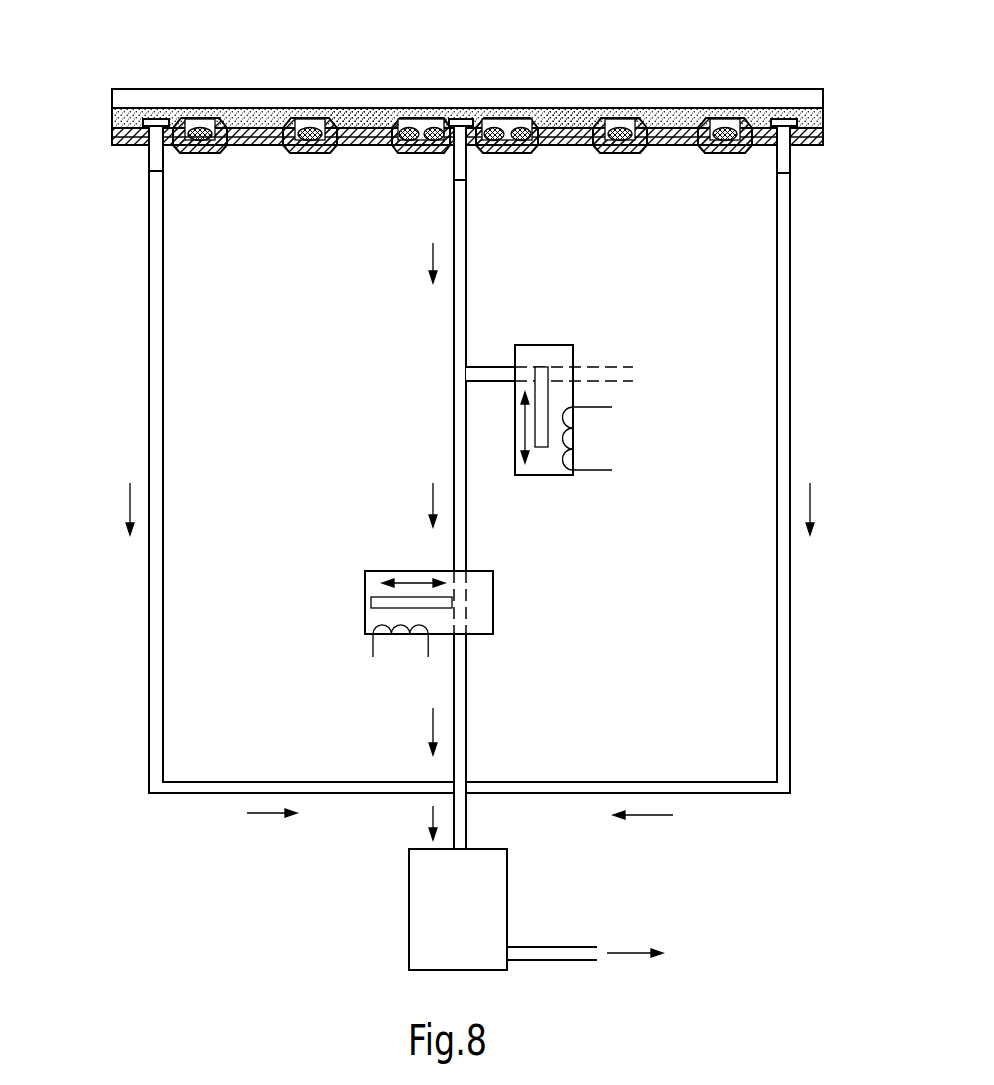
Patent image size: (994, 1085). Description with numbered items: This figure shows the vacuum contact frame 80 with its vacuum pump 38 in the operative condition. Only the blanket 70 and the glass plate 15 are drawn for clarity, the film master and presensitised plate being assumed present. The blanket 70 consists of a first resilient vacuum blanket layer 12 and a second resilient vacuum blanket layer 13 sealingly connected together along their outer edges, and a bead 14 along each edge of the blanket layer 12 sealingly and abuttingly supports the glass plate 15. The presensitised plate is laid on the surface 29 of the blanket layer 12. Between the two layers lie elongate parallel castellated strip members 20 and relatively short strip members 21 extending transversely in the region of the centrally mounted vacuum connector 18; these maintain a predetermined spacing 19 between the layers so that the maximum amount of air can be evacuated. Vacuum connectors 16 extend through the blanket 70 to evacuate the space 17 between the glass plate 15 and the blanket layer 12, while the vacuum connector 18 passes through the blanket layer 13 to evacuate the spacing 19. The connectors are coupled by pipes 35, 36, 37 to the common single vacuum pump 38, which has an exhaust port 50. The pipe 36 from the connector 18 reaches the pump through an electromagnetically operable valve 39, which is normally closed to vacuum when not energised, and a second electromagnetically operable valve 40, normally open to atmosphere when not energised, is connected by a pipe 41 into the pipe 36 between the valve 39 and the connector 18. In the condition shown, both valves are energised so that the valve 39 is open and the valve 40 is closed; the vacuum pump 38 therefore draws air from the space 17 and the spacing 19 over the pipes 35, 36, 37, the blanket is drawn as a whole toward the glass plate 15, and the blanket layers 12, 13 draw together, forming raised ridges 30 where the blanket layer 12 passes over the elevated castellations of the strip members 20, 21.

The vacuum contact frame 80 is at (788, 62).
The bead 14 is at (803, 128).
The blanket 70 is at (825, 145).
The surface 29 is at (364, 117).
The raised ridges 30 is at (418, 117).
The space 17 is at (568, 118).
The glass plate 15 is at (651, 103).
The first resilient vacuum blanket layer 12 is at (728, 118).
The vacuum connectors 16 is at (164, 160).
The spacing 19 is at (294, 152).
The vacuum connector 18 is at (453, 170).
The short strip members 21 is at (490, 155).
The strip members 20 is at (512, 152).
The second resilient vacuum blanket layer 13 is at (668, 150).
The pipe 35 is at (163, 418).
The pipe 36 is at (455, 350).
The pipe 37 is at (790, 360).
The pipe 41 is at (488, 366).
The second electromagnetically operable valve 40 is at (532, 345).
The electromagnetically operable valve 39 is at (493, 608).
The vacuum pump 38 is at (507, 885).
The exhaust port 50 is at (580, 947).